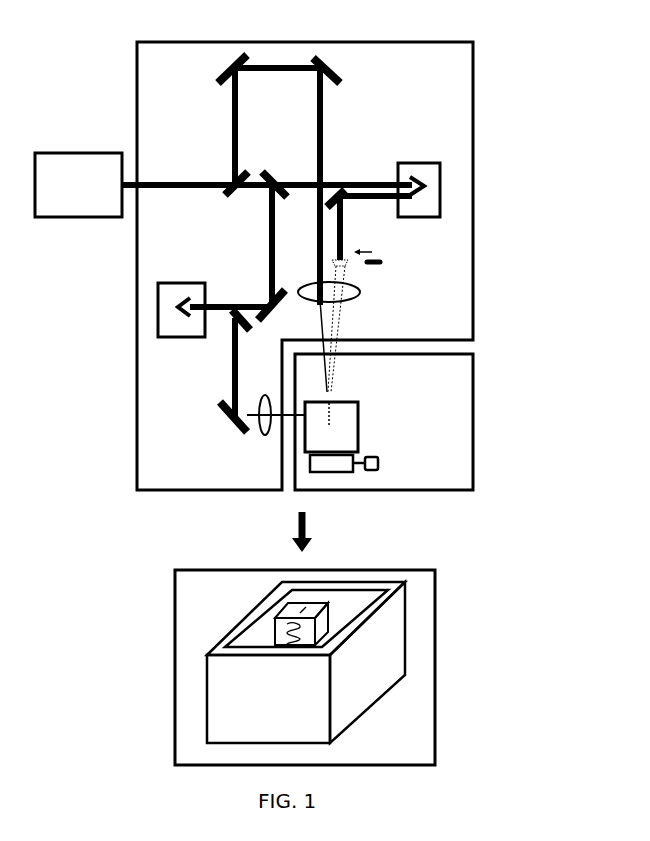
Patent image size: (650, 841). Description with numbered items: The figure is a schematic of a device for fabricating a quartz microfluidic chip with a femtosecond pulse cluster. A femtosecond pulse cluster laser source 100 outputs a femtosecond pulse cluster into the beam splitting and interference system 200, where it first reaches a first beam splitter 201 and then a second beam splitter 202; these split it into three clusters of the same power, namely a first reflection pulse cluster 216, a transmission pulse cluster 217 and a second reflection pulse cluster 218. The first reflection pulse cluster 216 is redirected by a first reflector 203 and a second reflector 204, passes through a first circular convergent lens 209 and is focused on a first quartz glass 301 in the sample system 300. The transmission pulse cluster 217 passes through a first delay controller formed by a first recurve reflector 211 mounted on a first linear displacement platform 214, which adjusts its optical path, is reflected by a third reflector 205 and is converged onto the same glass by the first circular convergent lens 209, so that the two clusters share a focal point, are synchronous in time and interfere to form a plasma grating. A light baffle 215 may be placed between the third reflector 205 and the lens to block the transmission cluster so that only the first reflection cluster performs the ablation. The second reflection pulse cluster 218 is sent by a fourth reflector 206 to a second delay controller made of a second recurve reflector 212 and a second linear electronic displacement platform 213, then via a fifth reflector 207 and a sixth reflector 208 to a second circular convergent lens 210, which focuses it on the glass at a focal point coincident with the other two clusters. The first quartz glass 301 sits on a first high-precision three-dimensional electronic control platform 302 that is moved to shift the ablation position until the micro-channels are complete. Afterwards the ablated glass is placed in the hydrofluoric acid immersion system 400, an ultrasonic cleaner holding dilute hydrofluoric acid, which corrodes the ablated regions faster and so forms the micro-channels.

The femtosecond pulse cluster laser source 100 is at (62, 180).
The beam splitting and interference system 200 is at (440, 66).
The first beam splitter 201 is at (232, 190).
The second beam splitter 202 is at (270, 192).
The first reflector 203 is at (230, 70).
The second reflector 204 is at (333, 70).
The third reflector 205 is at (345, 205).
The fourth reflector 206 is at (285, 300).
The fifth reflector 207 is at (235, 320).
The sixth reflector 208 is at (235, 420).
The first circular convergent lens 209 is at (350, 294).
The second circular convergent lens 210 is at (265, 432).
The first recurve reflector 211 is at (412, 188).
The second recurve reflector 212 is at (178, 305).
The second linear electronic displacement platform 213 is at (168, 320).
The first linear displacement platform 214 is at (435, 207).
The light baffle 215 is at (345, 263).
The first reflection pulse cluster 216 is at (325, 122).
The transmission pulse cluster 217 is at (375, 252).
The second reflection pulse cluster 218 is at (232, 388).
The sample system 300 is at (433, 477).
The first quartz glass 301 is at (345, 426).
The first high-precision three-dimensional electronic control platform 302 is at (380, 463).
The hydrofluoric acid immersion system 400 is at (212, 604).